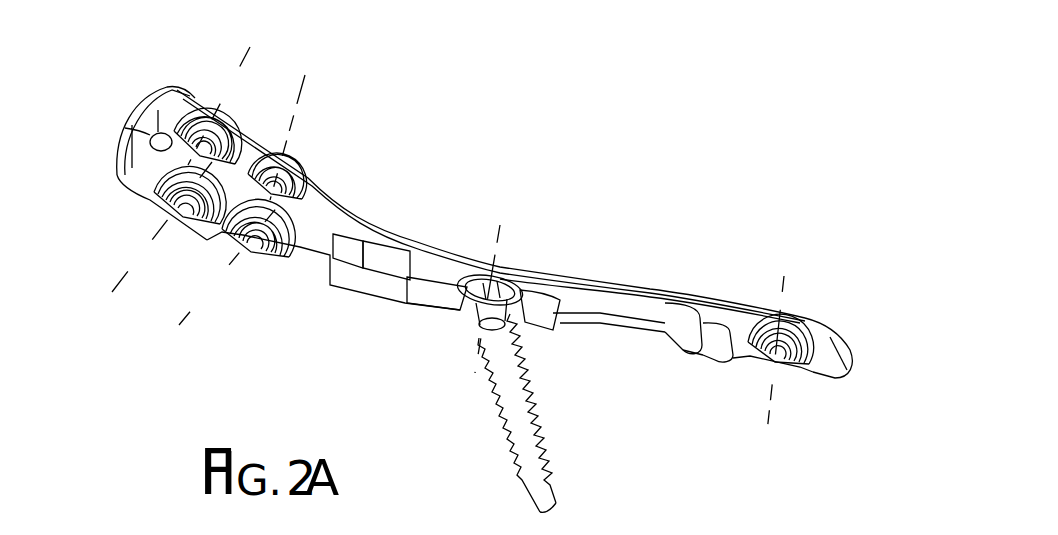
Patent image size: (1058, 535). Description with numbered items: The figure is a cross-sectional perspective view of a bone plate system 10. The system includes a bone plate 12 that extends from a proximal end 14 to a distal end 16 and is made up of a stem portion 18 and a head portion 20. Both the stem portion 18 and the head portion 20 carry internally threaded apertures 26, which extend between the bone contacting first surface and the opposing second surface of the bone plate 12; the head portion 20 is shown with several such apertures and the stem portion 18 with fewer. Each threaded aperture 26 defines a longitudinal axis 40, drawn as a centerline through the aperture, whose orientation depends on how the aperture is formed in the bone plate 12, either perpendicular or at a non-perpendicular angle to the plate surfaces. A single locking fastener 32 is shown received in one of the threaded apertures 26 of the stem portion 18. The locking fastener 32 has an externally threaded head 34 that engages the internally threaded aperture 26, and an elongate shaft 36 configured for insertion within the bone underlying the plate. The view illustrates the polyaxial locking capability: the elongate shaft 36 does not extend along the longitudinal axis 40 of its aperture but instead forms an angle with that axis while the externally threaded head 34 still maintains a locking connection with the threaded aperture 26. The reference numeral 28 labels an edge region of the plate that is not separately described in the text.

The bone plate system 10 is at (476, 261).
The bone plate 12 is at (486, 194).
The proximal end 14 is at (855, 362).
The distal end 16 is at (117, 128).
The stem portion 18 is at (563, 273).
The head portion 20 is at (247, 128).
The internally threaded aperture 26 is at (205, 148).
The lower edge 28 is at (658, 305).
The locking fastener 32 is at (503, 391).
The externally threaded head 34 is at (462, 327).
The elongate shaft 36 is at (547, 447).
The longitudinal axis 40 is at (224, 98).